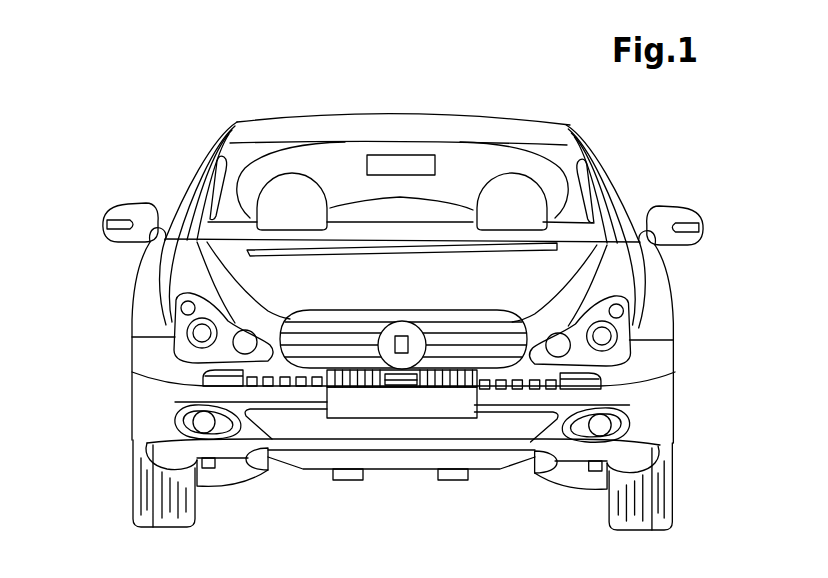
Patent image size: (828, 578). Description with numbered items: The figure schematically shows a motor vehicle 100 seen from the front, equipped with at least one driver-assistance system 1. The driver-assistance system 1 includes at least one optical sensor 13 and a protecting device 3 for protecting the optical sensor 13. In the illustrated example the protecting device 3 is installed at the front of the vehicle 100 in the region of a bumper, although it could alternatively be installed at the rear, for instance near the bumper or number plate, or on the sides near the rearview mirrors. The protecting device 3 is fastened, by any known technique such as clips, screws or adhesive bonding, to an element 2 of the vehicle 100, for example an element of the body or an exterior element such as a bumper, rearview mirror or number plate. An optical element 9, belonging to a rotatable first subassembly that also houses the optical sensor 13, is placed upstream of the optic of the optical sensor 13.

The motor vehicle 100 is at (160, 160).
The driver-assistance system 1 is at (421, 215).
The element of the vehicle 2 is at (420, 322).
The optical sensor 13 is at (408, 313).
The protecting device 3 is at (364, 354).
The optical element 9 is at (398, 355).